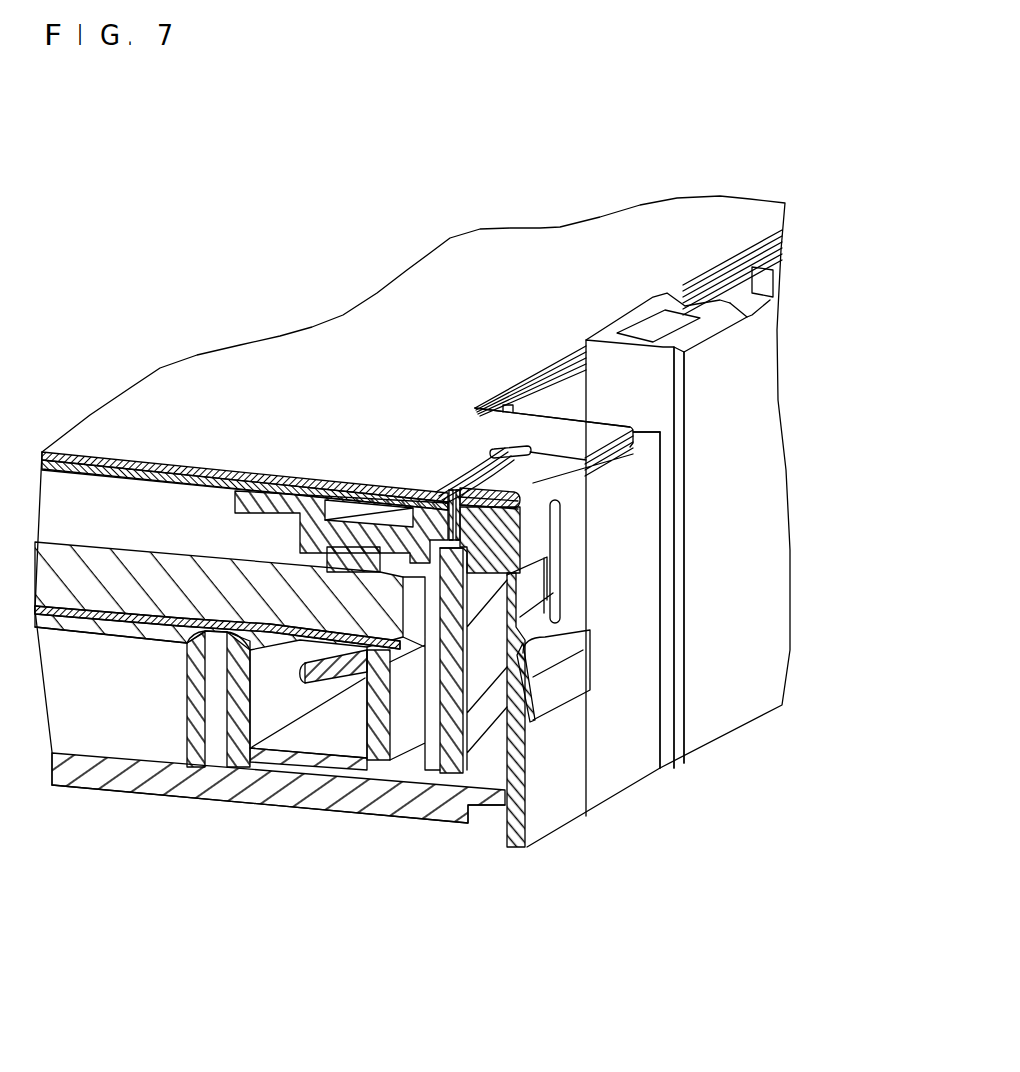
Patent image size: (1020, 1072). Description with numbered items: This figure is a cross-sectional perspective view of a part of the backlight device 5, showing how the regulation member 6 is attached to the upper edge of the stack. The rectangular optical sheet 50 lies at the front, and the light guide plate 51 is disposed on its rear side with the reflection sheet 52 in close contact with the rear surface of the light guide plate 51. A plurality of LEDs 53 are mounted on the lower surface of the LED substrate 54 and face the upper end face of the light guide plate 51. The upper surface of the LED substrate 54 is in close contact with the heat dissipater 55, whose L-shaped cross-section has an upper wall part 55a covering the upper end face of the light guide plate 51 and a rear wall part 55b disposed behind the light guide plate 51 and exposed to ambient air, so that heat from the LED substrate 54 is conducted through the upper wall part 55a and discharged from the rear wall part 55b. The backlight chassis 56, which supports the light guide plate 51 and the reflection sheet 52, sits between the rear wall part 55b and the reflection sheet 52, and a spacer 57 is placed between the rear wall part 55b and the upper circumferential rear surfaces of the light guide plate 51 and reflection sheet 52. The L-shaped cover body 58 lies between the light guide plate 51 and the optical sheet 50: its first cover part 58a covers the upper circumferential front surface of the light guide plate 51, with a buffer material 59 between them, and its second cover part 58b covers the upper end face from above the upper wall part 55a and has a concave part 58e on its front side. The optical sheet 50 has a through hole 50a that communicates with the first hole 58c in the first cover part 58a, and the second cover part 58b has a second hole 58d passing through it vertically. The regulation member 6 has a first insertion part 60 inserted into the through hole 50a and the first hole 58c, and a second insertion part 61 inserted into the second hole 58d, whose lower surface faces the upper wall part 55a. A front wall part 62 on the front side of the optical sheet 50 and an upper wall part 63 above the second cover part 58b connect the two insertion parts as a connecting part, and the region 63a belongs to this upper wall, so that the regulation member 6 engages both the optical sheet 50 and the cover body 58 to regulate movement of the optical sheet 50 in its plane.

The backlight device 5 is at (800, 170).
The regulation member 6 is at (602, 607).
The optical sheet 50 is at (655, 225).
The through hole 50a is at (477, 408).
The light guide plate 51 is at (113, 557).
The reflection sheet 52 is at (110, 610).
The LEDs 53 is at (455, 766).
The LED substrate 54 is at (470, 762).
The heat dissipater 55 is at (370, 823).
The upper wall part 55a is at (487, 762).
The rear wall part 55b is at (285, 800).
The backlight chassis 56 is at (192, 753).
The spacer 57 is at (243, 757).
The cover body 58 is at (698, 795).
The first cover part 58a is at (284, 490).
The second cover part 58b is at (660, 625).
The first hole 58c is at (520, 527).
The second hole 58d is at (573, 633).
The concave part 58e is at (640, 437).
The buffer material 59 is at (327, 565).
The first insertion part 60 is at (447, 473).
The second insertion part 61 is at (562, 637).
The front wall part 62 is at (446, 488).
The upper wall part 63 is at (603, 633).
The snap arm clip 63a is at (483, 478).